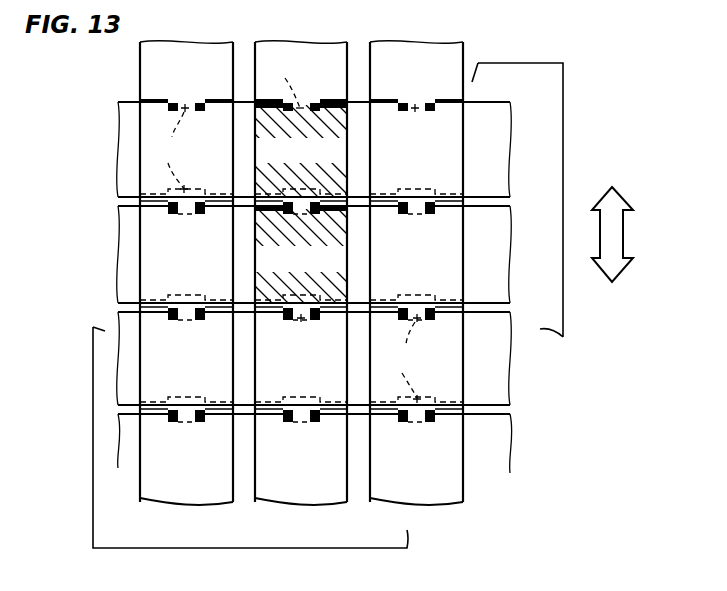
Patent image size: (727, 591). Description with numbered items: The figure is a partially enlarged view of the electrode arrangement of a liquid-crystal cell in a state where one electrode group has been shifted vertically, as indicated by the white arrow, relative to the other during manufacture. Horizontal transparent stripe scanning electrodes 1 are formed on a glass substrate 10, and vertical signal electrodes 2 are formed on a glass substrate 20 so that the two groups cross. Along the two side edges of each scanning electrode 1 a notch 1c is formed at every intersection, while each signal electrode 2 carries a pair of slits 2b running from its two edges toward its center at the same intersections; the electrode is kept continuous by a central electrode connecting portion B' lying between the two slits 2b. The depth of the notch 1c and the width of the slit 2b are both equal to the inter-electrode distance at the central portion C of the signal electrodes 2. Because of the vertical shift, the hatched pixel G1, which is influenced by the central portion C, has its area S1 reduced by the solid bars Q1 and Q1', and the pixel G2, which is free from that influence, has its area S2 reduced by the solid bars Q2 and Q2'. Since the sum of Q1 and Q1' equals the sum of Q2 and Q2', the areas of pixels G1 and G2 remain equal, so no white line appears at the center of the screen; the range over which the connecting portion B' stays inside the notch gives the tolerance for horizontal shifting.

The scanning electrode 1 is at (497, 148).
The notch 1c is at (287, 228).
The signal electrode 2 is at (207, 495).
The slit 2b is at (330, 102).
The glass substrate 10 is at (532, 73).
The glass substrate 20 is at (105, 515).
The central portion C is at (142, 207).
The central electrode connecting portion B' is at (368, 253).
The area decrease Q1 is at (240, 239).
The area decrease Q1' is at (363, 239).
The area decrease Q2 is at (240, 134).
The area decrease Q2' is at (362, 134).
The pixel G1 is at (305, 256).
The pixel area S1 is at (305, 256).
The pixel G2 is at (304, 151).
The pixel area S2 is at (304, 151).